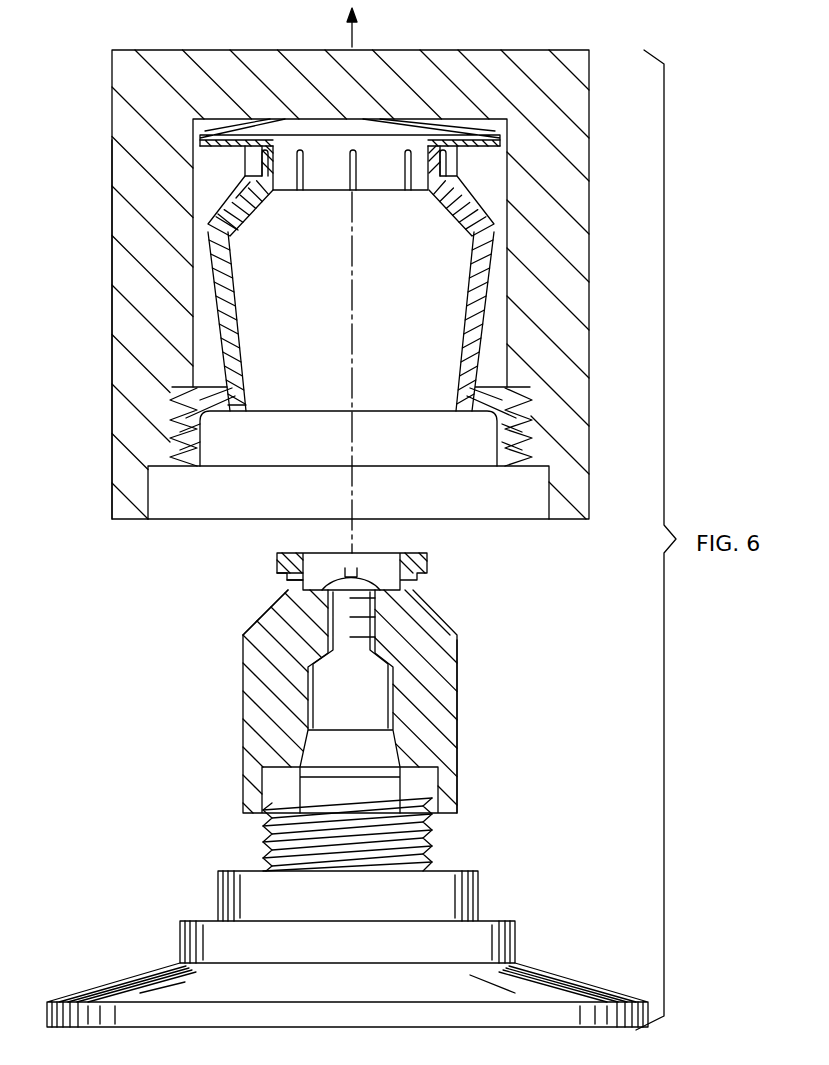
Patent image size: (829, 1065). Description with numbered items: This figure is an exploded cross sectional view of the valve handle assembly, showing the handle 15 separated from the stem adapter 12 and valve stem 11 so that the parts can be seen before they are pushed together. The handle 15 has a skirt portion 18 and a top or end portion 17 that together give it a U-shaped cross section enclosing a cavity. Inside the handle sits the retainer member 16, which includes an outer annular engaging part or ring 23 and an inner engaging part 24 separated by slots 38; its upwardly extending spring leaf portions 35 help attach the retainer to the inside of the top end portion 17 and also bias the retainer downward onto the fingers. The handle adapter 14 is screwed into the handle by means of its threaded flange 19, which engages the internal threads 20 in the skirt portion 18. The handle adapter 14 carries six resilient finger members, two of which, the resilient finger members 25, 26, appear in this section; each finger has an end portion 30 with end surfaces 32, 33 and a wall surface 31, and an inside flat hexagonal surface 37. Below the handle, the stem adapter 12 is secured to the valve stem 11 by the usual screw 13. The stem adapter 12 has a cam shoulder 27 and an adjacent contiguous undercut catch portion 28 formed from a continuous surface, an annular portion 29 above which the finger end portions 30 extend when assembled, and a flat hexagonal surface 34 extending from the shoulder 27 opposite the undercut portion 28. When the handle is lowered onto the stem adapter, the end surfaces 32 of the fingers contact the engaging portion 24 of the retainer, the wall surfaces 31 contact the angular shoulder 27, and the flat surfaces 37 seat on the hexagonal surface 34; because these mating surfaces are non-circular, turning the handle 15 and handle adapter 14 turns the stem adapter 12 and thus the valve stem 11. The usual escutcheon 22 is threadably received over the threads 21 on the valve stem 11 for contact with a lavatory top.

The valve stem 11 is at (364, 703).
The stem adapter 12 is at (243, 716).
The screw 13 is at (360, 578).
The handle adapter 14 is at (247, 372).
The handle 15 is at (112, 98).
The retainer member 16 is at (200, 143).
The top or end portion 17 is at (264, 48).
The skirt portion 18 is at (112, 281).
The threaded flange 19 is at (203, 432).
The internal threads 20 is at (172, 435).
The threads 21 is at (263, 842).
The escutcheon 22 is at (140, 978).
The outer annular engaging part or ring 23 is at (462, 162).
The inner engaging part 24 is at (352, 195).
The resilient finger member 25 is at (466, 300).
The resilient finger member 26 is at (236, 292).
The cam shoulder 27 is at (260, 614).
The undercut catch portion 28 is at (287, 588).
The annular portion 29 is at (278, 560).
The end portion 30 is at (244, 232).
The wall surface 31 is at (256, 216).
The end surface 32 is at (248, 188).
The end surface 33 is at (242, 190).
The flat hexagonal surface 34 is at (457, 690).
The spring leaf portion 35 is at (490, 118).
The flat hexagonal surface 37 is at (244, 340).
The slot 38 is at (409, 190).